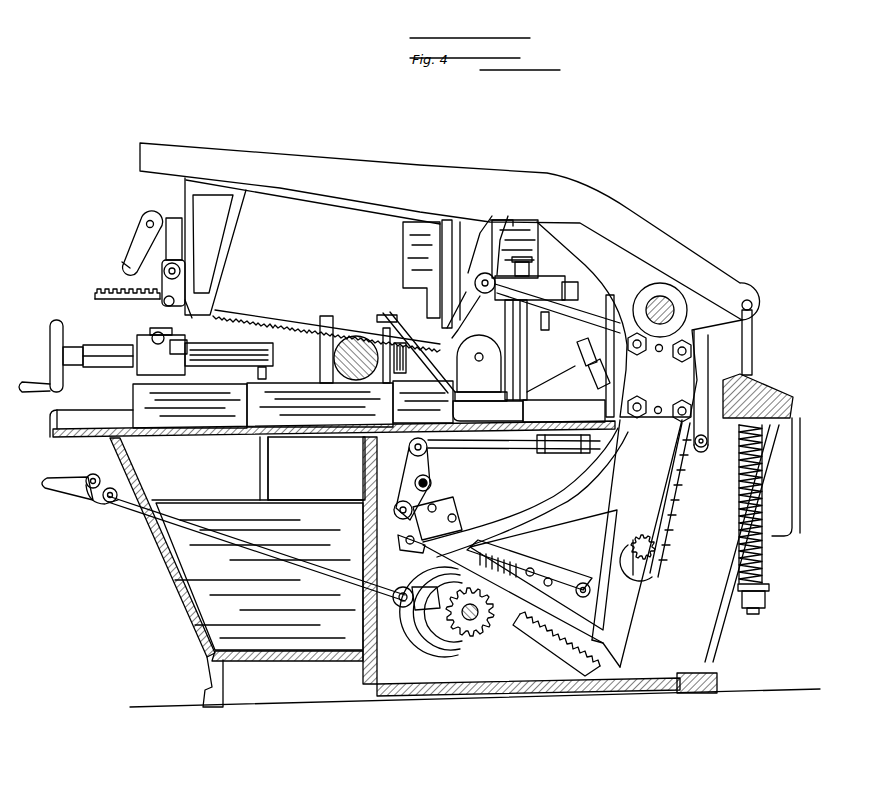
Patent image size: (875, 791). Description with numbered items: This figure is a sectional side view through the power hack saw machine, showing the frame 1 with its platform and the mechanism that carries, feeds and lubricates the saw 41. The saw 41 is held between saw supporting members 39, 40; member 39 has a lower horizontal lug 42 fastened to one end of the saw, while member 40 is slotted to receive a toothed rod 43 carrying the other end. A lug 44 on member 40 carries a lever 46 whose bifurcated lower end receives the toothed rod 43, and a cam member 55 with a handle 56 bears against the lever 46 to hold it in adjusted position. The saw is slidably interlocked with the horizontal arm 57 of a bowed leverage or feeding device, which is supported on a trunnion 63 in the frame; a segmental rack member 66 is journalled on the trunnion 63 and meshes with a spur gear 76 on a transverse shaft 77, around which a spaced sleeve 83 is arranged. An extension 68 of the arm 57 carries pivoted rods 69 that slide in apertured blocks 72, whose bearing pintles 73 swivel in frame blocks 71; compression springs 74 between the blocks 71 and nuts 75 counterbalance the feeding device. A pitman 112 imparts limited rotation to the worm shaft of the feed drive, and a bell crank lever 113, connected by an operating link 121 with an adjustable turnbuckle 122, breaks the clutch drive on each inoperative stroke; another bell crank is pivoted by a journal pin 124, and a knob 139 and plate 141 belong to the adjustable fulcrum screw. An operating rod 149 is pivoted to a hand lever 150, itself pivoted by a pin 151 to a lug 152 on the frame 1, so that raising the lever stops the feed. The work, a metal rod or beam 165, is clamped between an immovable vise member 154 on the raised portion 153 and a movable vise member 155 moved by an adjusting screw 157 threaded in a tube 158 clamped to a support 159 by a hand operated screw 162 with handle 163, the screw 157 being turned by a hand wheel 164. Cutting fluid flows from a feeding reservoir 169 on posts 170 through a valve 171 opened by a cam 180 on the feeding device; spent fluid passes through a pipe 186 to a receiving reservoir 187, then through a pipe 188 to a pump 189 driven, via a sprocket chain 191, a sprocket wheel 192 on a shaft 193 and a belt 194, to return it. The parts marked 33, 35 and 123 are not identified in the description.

The frame 1 is at (178, 602).
The nut 33 is at (559, 309).
The lever 35 is at (477, 277).
The saw supporting member 39 is at (442, 307).
The saw supporting member 40 is at (208, 267).
The saw 41 is at (275, 318).
The lower horizontal lug 42 is at (423, 402).
The toothed rod 43 is at (98, 296).
The lug 44 is at (164, 273).
The lever 46 is at (165, 248).
The cam member 55 is at (156, 214).
The handle 56 is at (128, 262).
The horizontal arm 57 is at (390, 163).
The trunnion 63 is at (670, 300).
The segmental rack member 66 is at (612, 573).
The extension 68 is at (737, 302).
The rods 69 is at (754, 357).
The humps or blocks 71 is at (792, 384).
The apertured blocks 72 is at (758, 378).
The bearing pintles 73 is at (780, 408).
The compression springs 74 is at (767, 548).
The nuts 75 is at (769, 598).
The spur gear 76 is at (482, 636).
The shaft 77 is at (455, 634).
The sleeve 83 is at (484, 645).
The pitman 112 is at (593, 573).
The bell crank lever 113 is at (424, 463).
The operating link 121 is at (508, 447).
The adjustable turnbuckle 122 is at (558, 452).
The pin 123 is at (707, 448).
The journal pin 124 is at (704, 363).
The knob 139 is at (575, 363).
The plate 141 is at (564, 411).
The operating rod 149 is at (258, 553).
The hand lever 150 is at (70, 488).
The pin 151 is at (110, 503).
The lug 152 is at (116, 493).
The raised portion 153 is at (290, 410).
The immovable jaw or vise member 154 is at (413, 358).
The movable vise member 155 is at (330, 358).
The adjusting screw 157 is at (76, 347).
The tube 158 is at (102, 362).
The support 159 is at (182, 352).
The hand operated screw 162 is at (174, 337).
The handle 163 is at (182, 305).
The hand wheel 164 is at (58, 356).
The metal rod or beam 165 is at (360, 330).
The feeding reservoir 169 is at (425, 237).
The posts 170 is at (393, 320).
The valve 171 is at (546, 282).
The cam 180 is at (594, 286).
The pipe 186 is at (262, 472).
The receiving reservoir 187 is at (278, 655).
The pipe 188 is at (488, 411).
The pump 189 is at (481, 368).
The sprocket chain 191 is at (676, 500).
The sprocket wheel 192 is at (658, 550).
The shaft 193 is at (653, 571).
The belt 194 is at (530, 392).